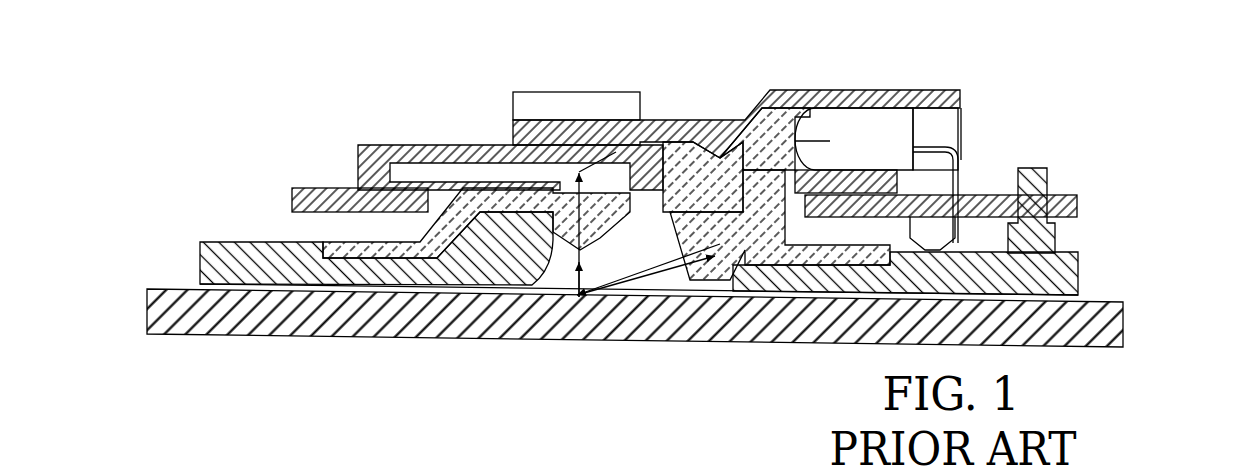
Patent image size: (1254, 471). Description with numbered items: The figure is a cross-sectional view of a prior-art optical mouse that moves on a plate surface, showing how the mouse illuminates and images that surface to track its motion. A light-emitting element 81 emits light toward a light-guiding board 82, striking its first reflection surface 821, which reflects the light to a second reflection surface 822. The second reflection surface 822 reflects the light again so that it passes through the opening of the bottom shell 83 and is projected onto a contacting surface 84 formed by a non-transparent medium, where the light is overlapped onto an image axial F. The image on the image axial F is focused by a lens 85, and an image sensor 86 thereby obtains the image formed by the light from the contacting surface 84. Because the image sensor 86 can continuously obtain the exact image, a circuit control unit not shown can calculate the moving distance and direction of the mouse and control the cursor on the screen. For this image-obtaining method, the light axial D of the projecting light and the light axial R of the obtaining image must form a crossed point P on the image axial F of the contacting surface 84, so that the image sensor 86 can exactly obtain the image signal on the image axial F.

The light-emitting element 81 is at (850, 130).
The light-guiding board 82 is at (748, 125).
The first reflection surface 821 is at (704, 178).
The second reflection surface 822 is at (755, 145).
The bottom shell 83 is at (1065, 268).
The contacting surface 84 is at (640, 297).
The lens 85 is at (547, 227).
The image sensor 86 is at (455, 150).
The image axial F is at (1130, 302).
The crossed point P is at (579, 297).
The light axial of the projecting light D is at (655, 272).
The light axial of the obtaining image R is at (608, 173).